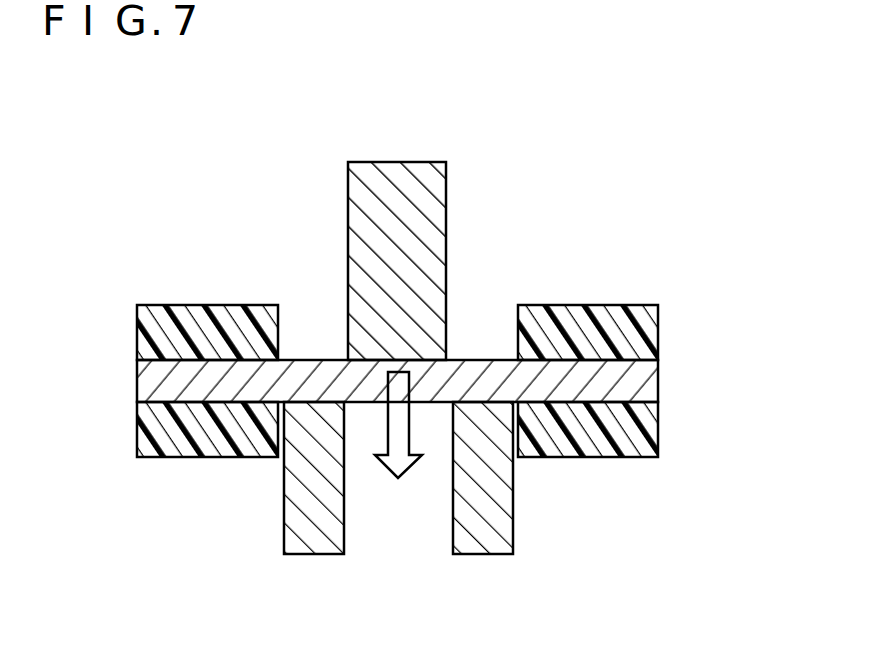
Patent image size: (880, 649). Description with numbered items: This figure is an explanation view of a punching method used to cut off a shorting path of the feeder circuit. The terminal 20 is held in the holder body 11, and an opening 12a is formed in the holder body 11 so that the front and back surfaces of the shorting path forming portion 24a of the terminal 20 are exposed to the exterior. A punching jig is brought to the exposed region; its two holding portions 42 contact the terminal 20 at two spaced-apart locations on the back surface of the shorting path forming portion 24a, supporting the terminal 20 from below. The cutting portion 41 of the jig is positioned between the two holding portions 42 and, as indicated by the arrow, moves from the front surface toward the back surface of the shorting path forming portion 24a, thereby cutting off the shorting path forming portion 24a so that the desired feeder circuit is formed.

The holder body 11 is at (137, 333).
The terminal 20 is at (317, 356).
The cutting portion 41 is at (418, 166).
The holding portions 42 is at (285, 525).
The opening 12a is at (480, 328).
The shorting path forming portion 24a is at (433, 397).